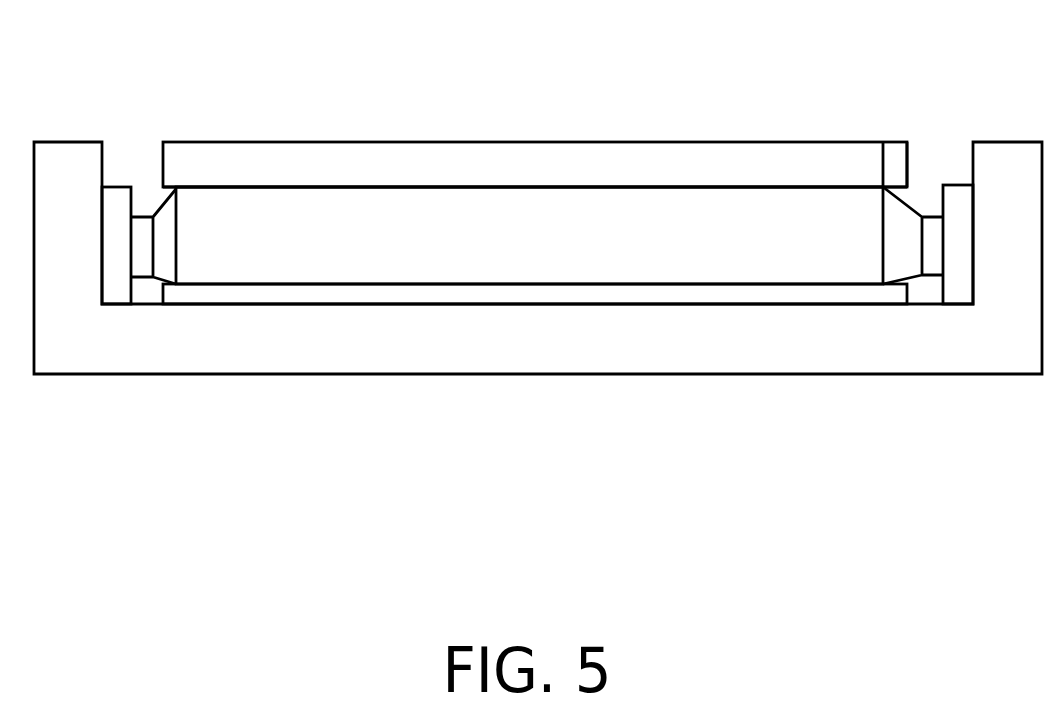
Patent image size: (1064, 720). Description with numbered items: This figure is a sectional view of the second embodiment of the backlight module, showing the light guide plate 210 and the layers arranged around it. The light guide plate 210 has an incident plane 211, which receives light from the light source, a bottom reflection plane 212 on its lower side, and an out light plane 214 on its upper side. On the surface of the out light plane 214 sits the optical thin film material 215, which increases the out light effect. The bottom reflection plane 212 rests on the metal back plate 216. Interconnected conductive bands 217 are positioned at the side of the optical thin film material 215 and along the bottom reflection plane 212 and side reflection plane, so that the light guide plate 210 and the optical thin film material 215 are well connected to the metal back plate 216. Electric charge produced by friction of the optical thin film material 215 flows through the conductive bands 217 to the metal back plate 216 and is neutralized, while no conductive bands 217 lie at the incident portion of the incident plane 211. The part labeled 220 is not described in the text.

The light guide plate 210 is at (700, 225).
The incident plane 211 is at (176, 190).
The bottom reflection plane 212 is at (475, 304).
The out light plane 214 is at (547, 187).
The optical thin film material 215 is at (332, 170).
The metal back plate 216 is at (274, 327).
The conductive bands 217 is at (896, 168).
The clamp block 220 is at (118, 204).